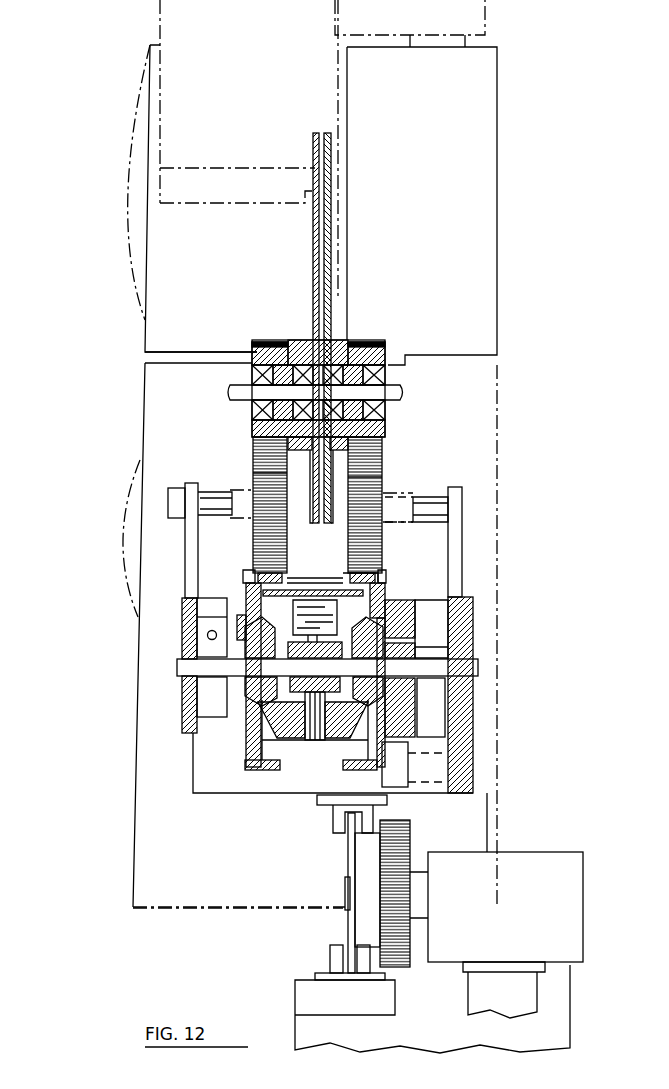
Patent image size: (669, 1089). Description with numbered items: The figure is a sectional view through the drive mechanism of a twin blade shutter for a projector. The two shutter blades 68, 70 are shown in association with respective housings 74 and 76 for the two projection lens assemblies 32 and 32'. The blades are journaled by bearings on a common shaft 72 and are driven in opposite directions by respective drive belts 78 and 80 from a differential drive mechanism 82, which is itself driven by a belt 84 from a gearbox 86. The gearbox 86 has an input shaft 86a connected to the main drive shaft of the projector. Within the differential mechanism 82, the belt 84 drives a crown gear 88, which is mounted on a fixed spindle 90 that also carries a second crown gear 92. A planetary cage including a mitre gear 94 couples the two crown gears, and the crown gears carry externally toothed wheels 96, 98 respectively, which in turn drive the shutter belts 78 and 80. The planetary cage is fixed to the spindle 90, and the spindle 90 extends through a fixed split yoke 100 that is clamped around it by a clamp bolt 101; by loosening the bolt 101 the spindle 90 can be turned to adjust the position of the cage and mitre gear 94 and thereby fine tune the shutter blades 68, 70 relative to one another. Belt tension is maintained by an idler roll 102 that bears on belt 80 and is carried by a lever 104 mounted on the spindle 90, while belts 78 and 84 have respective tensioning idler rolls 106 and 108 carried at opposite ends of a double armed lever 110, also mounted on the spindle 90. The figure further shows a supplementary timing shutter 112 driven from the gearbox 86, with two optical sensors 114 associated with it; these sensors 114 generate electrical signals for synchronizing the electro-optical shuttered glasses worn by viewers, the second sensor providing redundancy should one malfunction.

The projection lens assembly 32 is at (275, 182).
The projection lens assembly 32' is at (93, 538).
The shutter blade 68 is at (313, 270).
The shutter blade 70 is at (331, 225).
The common shaft 72 is at (393, 392).
The housing 74 is at (173, 317).
The housing 76 is at (153, 458).
The drive belt 78 is at (380, 445).
The drive belt 80 is at (250, 423).
The differential drive mechanism 82 is at (413, 580).
The belt 84 is at (410, 815).
The gearbox 86 is at (570, 898).
The input shaft 86a is at (528, 995).
The crown gear 88 is at (388, 643).
The fixed spindle 90 is at (467, 668).
The second crown gear 92 is at (247, 702).
The mitre gear 94 is at (283, 723).
The externally toothed wheel 96 is at (377, 573).
The externally toothed wheel 98 is at (287, 583).
The fixed split yoke 100 is at (205, 700).
The clamp bolt 101 is at (207, 635).
The idler roll 102 is at (247, 482).
The lever 104 is at (183, 568).
The tensioning idler roll 106 is at (400, 478).
The tensioning idler roll 108 is at (400, 768).
The double armed lever 110 is at (453, 585).
The supplementary timing shutter 112 is at (348, 858).
The optical sensor 114 is at (335, 817).